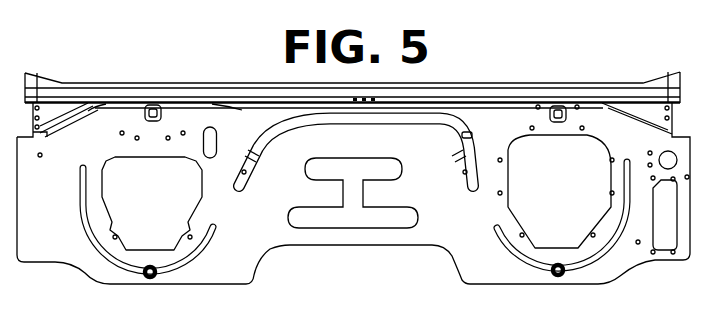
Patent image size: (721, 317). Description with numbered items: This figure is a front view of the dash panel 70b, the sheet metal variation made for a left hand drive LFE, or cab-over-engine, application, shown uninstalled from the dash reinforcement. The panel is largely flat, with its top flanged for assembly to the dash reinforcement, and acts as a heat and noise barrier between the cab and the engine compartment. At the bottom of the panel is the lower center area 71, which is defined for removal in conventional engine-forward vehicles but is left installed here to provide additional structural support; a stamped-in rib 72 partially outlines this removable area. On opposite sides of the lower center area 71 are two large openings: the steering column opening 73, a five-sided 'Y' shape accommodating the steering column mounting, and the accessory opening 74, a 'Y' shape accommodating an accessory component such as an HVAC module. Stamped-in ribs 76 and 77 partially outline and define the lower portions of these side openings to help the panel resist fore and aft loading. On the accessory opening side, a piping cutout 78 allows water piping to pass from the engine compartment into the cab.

The dash panel 70b is at (557, 80).
The lower center area 71 is at (367, 237).
The stamped-in rib 72 is at (268, 126).
The steering column opening 73 is at (582, 157).
The accessory opening 74 is at (153, 203).
The stamped-in rib 76 is at (198, 262).
The stamped-in rib 77 is at (497, 246).
The piping cutout 78 is at (204, 128).